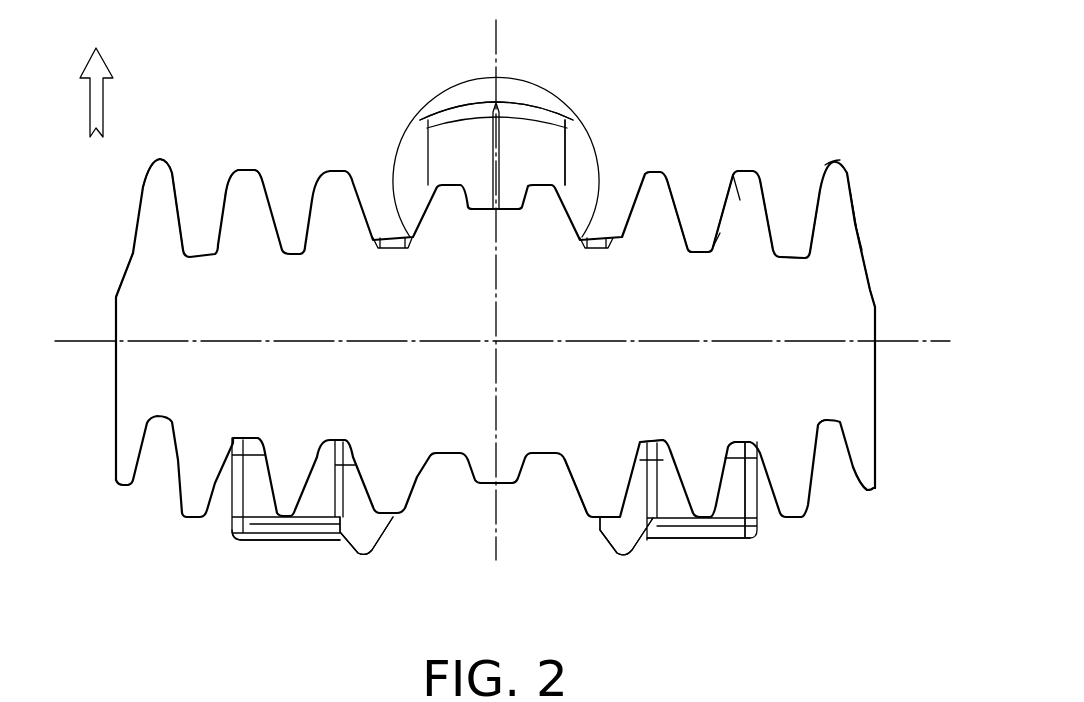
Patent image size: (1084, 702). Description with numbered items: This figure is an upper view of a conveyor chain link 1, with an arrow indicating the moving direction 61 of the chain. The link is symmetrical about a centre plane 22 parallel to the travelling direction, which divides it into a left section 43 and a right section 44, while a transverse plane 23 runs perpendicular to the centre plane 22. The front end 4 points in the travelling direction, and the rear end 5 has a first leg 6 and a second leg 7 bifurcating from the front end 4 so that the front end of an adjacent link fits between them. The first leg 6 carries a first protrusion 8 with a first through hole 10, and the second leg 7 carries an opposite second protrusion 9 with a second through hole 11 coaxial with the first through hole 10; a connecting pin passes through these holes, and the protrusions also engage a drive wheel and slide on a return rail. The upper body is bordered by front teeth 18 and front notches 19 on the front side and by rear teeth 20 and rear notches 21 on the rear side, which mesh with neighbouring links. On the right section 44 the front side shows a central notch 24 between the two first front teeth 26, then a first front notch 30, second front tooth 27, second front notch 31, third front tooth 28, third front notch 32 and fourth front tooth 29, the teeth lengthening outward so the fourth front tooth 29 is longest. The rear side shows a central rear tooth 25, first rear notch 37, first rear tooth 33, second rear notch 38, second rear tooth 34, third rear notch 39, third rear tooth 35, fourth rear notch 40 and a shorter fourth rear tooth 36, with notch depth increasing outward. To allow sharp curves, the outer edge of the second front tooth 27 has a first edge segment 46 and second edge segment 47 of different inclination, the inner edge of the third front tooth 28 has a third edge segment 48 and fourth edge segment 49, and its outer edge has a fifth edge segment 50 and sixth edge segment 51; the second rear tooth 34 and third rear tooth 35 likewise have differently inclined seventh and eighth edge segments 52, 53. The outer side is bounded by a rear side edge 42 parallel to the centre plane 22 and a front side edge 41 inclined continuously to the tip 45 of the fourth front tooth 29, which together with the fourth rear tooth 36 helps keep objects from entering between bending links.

The conveyor chain link 1 is at (325, 75).
The front end 4 is at (410, 97).
The rear end 5 is at (518, 553).
The first leg 6 is at (617, 523).
The second leg 7 is at (368, 523).
The first protrusion 8 is at (700, 530).
The second protrusion 9 is at (293, 527).
The first through hole 10 is at (780, 530).
The second through hole 11 is at (208, 533).
The front teeth 18 is at (188, 146).
The front notches 19 is at (240, 135).
The rear teeth 20 is at (585, 620).
The rear notches 21 is at (622, 605).
The centre plane 22 is at (487, 45).
The transverse plane 23 is at (900, 345).
The central front notch 24 is at (463, 157).
The central rear tooth 25 is at (483, 467).
The first front tooth 26 is at (548, 200).
The second front tooth 27 is at (657, 193).
The third front tooth 28 is at (741, 197).
The fourth front tooth 29 is at (837, 183).
The first front notch 30 is at (610, 220).
The second front notch 31 is at (717, 217).
The third front notch 32 is at (803, 220).
The first rear tooth 33 is at (600, 493).
The second rear tooth 34 is at (740, 465).
The third rear tooth 35 is at (790, 490).
The fourth rear tooth 36 is at (866, 470).
The first rear notch 37 is at (545, 467).
The second rear notch 38 is at (665, 470).
The third rear notch 39 is at (765, 525).
The fourth rear notch 40 is at (832, 452).
The front side edge 41 is at (860, 243).
The rear side edge 42 is at (876, 425).
The left section 43 is at (172, 295).
The right section 44 is at (813, 315).
The tip 45 is at (853, 193).
The first edge segment 46 is at (680, 210).
The second edge segment 47 is at (707, 217).
The third edge segment 48 is at (730, 193).
The fourth edge segment 49 is at (720, 233).
The fifth edge segment 50 is at (773, 230).
The sixth edge segment 51 is at (797, 223).
The seventh edge segment 52 is at (855, 217).
The eighth edge segment 53 is at (857, 230).
The moving direction 61 is at (100, 108).